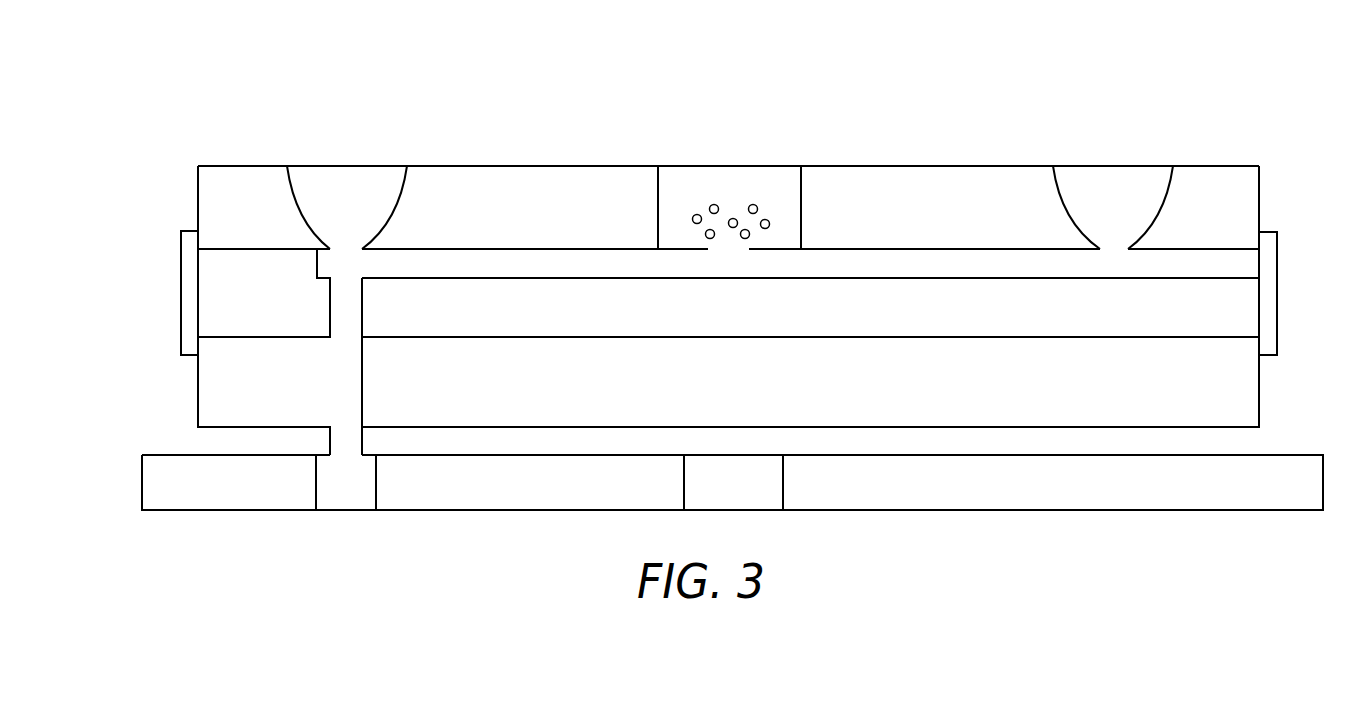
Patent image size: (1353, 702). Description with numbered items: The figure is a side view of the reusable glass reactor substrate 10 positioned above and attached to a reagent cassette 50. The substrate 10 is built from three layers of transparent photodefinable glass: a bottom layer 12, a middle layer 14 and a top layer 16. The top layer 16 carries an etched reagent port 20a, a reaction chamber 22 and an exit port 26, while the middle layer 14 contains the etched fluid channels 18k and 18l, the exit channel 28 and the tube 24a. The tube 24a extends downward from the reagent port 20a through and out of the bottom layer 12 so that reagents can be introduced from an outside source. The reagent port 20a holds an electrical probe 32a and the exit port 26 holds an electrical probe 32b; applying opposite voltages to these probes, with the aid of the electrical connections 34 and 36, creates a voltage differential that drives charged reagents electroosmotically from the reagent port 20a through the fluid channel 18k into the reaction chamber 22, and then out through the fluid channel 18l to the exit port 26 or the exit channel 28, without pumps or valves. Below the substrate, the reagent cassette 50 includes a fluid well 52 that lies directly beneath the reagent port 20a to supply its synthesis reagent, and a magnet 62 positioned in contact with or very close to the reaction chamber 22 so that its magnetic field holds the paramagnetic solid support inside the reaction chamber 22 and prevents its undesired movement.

The reusable glass reactor substrate 10 is at (177, 105).
The bottom layer 12 is at (425, 399).
The middle layer 14 is at (279, 309).
The top layer 16 is at (259, 219).
The fluid channel 18k is at (495, 262).
The fluid channel 18l is at (900, 262).
The reagent port 20a is at (325, 175).
The reaction chamber 22 is at (708, 178).
The tube 24a is at (347, 375).
The exit port 26 is at (1090, 180).
The exit channel 28 is at (1220, 216).
The electrical probe 32a is at (357, 188).
The electrical probe 32b is at (1118, 195).
The electrical connection 34 is at (181, 292).
The electrical connection 36 is at (1277, 298).
The reagent cassette 50 is at (997, 501).
The fluid well 52 is at (354, 499).
The magnet 62 is at (745, 501).